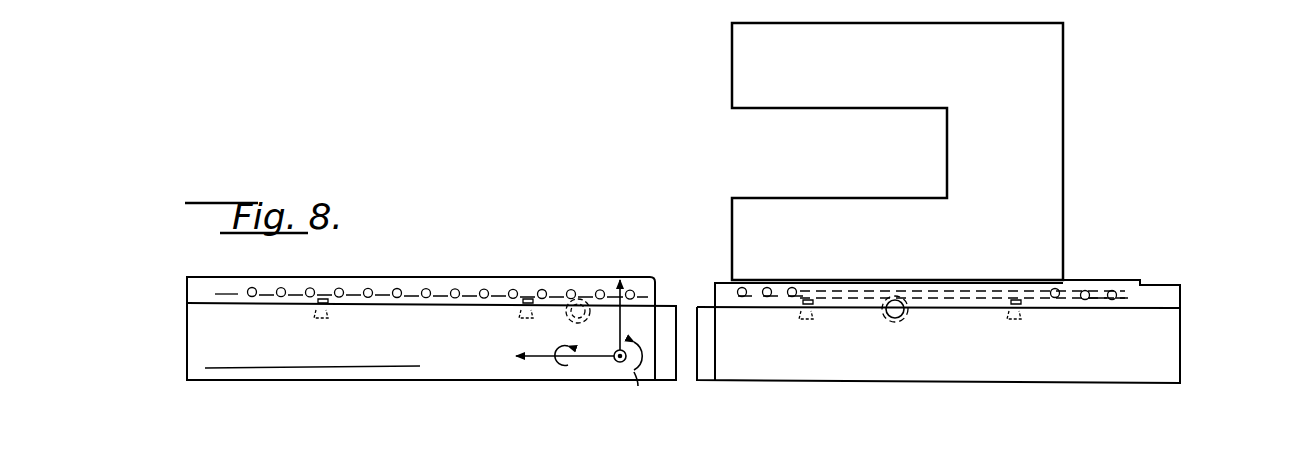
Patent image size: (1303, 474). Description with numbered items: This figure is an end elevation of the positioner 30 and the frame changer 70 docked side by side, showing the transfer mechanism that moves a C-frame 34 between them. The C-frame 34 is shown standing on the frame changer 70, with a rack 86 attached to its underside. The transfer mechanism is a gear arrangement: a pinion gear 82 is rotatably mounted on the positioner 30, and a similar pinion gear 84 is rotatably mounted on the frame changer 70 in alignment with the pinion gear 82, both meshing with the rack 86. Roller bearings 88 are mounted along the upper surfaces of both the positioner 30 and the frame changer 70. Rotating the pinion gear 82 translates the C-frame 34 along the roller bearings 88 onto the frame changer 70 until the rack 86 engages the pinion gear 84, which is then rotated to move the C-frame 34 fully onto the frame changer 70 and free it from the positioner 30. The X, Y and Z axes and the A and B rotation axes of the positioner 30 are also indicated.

The positioner 30 is at (190, 323).
The C-frame 34 is at (1062, 176).
The frame changer 70 is at (1182, 330).
The pinion gear 82 is at (581, 297).
The pinion gear 84 is at (904, 321).
The rack 86 is at (1043, 303).
The roller bearings 88 is at (483, 288).